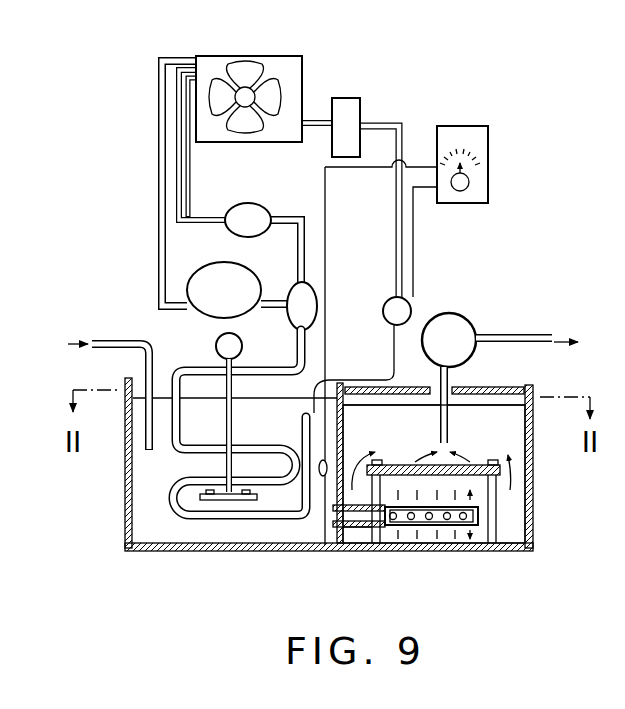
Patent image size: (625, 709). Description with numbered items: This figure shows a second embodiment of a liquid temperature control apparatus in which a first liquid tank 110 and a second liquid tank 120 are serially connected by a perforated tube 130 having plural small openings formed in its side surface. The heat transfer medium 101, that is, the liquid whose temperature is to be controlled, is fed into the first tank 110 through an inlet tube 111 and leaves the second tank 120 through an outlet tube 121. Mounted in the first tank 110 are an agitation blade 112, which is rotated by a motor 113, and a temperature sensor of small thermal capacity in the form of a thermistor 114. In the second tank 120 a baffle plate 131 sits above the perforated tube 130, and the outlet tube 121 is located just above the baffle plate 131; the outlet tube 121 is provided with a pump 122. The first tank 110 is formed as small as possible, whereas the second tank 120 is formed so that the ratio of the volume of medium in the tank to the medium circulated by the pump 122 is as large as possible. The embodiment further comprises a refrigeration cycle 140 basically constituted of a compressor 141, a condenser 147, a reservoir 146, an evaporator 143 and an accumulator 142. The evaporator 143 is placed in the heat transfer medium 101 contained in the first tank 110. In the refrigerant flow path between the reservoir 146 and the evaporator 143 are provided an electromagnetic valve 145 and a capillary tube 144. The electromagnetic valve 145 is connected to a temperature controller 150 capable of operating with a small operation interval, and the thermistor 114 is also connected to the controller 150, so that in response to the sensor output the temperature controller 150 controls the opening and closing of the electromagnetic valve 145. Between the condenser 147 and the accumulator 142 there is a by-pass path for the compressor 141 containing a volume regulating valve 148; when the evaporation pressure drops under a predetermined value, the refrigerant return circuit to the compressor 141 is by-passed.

The heat transfer medium 101 is at (127, 463).
The first liquid tank 110 is at (128, 520).
The inlet tube 111 is at (90, 340).
The agitation blade 112 is at (240, 500).
The motor 113 is at (218, 343).
The thermistor 114 is at (322, 545).
The second liquid tank 120 is at (533, 527).
The outlet tube 121 is at (392, 425).
The pump 122 is at (448, 330).
The perforated tube 130 is at (430, 526).
The baffle plate 131 is at (470, 460).
The refrigeration cycle 140 is at (153, 192).
The compressor 141 is at (205, 280).
The accumulator 142 is at (305, 310).
The evaporator 143 is at (190, 513).
The capillary tube 144 is at (393, 345).
The electromagnetic valve 145 is at (393, 298).
The reservoir 146 is at (346, 110).
The condenser 147 is at (275, 60).
The volume regulating valve 148 is at (250, 218).
The temperature controller 150 is at (488, 168).